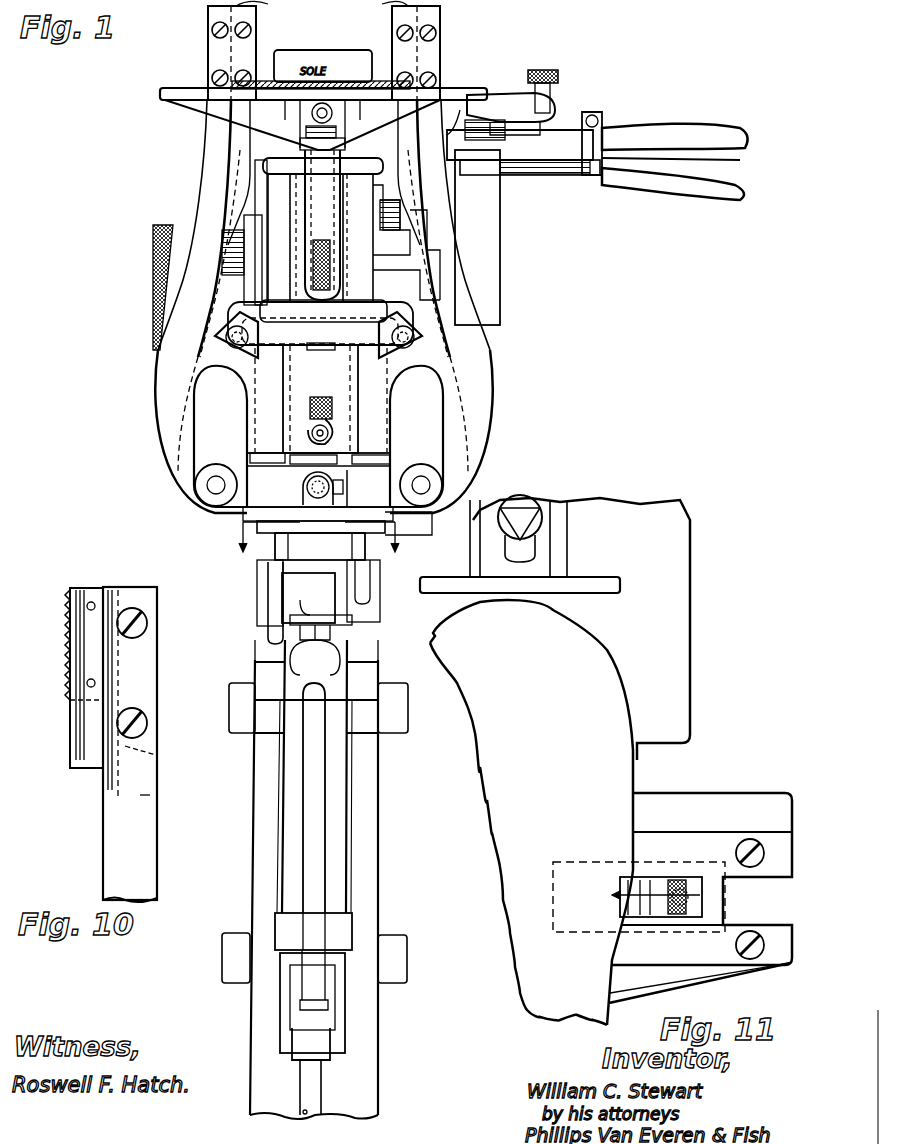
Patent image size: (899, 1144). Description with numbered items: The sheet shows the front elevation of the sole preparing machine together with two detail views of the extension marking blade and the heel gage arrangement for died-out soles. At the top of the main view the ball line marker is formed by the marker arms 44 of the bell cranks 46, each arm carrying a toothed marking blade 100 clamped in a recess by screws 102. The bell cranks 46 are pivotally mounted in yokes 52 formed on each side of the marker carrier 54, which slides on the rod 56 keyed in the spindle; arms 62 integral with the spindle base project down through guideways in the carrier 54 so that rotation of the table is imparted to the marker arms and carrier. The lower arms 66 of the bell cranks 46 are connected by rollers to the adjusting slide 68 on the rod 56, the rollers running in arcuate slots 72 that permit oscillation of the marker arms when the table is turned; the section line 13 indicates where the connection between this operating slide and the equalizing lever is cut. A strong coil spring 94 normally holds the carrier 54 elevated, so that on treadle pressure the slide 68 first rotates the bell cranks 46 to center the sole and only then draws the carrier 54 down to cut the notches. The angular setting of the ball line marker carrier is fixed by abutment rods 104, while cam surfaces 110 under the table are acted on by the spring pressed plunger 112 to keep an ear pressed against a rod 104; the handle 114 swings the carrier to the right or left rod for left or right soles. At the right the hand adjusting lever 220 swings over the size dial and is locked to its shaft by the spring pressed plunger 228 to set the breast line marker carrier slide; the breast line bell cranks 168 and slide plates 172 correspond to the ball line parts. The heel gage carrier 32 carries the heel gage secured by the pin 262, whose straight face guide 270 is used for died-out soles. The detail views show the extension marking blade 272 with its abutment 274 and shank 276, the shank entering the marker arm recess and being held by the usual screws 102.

In FIG. 1, the section line 13 is at (317, 549).
In FIG. 11, the heel gage carrier 32 is at (680, 560).
In FIG. 1, the marker arms 44 is at (210, 52).
In FIG. 1, the bell cranks 46 is at (165, 386).
In FIG. 1, the yokes 52 is at (212, 440).
In FIG. 1, the marker carrier 54 is at (340, 388).
In FIG. 1, the rod 56 is at (300, 595).
In FIG. 1, the arms 62 is at (358, 374).
In FIG. 1, the lower arms 66 is at (385, 468).
In FIG. 1, the adjusting slide 68 is at (282, 578).
In FIG. 1, the arcuate slots 72 is at (343, 489).
In FIG. 1, the coil spring 94 is at (318, 122).
In FIG. 1, the marking blade 100 is at (322, 11).
In FIG. 1, the screws 102 is at (216, 72).
In FIG. 10, the screws 102 is at (140, 625).
In FIG. 11, the screws 102 is at (678, 905).
In FIG. 1, the abutment rods 104 is at (236, 350).
In FIG. 1, the cam surfaces 110 is at (340, 138).
In FIG. 1, the spring pressed plunger 112 is at (314, 200).
In FIG. 1, the handle 114 is at (530, 110).
In FIG. 1, the bell cranks 168 is at (205, 132).
In FIG. 11, the slide plates 172 is at (707, 906).
In FIG. 1, the hand adjusting lever 220 is at (710, 132).
In FIG. 1, the spring pressed plunger 228 is at (552, 70).
In FIG. 11, the pin 262 is at (520, 520).
In FIG. 11, the straight face guide 270 is at (590, 596).
In FIG. 10, the extension marking blade 272 is at (68, 585).
In FIG. 11, the extension marking blade 272 is at (612, 896).
In FIG. 10, the abutment 274 is at (88, 748).
In FIG. 10, the shank 276 is at (158, 757).
In FIG. 11, the shank 276 is at (655, 890).